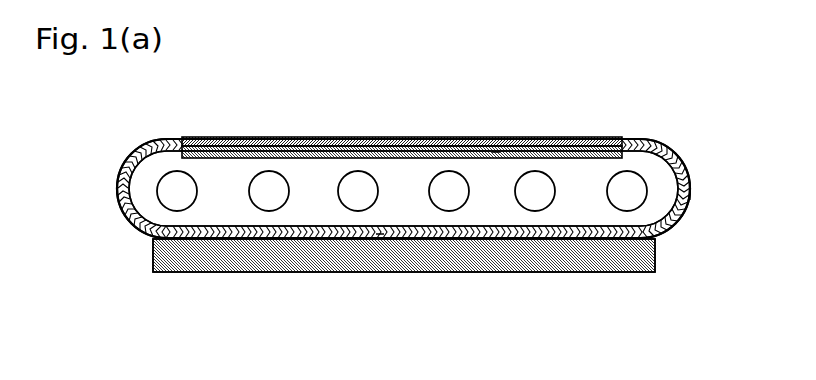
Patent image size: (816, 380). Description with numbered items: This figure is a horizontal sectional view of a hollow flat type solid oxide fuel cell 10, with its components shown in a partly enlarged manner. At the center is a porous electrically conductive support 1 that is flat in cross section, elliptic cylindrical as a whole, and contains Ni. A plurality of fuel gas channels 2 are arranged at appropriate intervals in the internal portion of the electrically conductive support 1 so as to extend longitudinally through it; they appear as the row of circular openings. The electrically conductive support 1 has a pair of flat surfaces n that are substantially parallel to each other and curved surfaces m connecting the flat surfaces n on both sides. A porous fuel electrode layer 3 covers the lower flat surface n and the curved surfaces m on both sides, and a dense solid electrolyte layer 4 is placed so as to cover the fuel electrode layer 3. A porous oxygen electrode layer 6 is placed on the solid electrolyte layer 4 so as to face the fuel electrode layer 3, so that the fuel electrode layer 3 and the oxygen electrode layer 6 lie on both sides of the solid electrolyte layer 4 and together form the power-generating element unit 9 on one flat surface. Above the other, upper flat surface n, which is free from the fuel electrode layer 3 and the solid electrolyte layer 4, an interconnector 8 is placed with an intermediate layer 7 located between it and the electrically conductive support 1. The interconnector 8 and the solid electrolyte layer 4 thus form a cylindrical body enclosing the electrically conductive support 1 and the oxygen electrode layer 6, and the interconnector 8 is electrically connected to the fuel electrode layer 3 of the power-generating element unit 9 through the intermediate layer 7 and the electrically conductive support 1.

The electrically conductive support 1 is at (305, 208).
The fuel gas channels 2 is at (347, 190).
The fuel electrode layer 3 is at (672, 238).
The solid electrolyte layer 4 is at (557, 237).
The oxygen electrode layer 6 is at (540, 262).
The intermediate layer 7 is at (588, 152).
The interconnector 8 is at (357, 140).
The power-generating element unit 9 is at (458, 276).
The fuel cell 10 is at (654, 139).
The flat surfaces n is at (496, 152).
The curved surfaces m is at (117, 190).